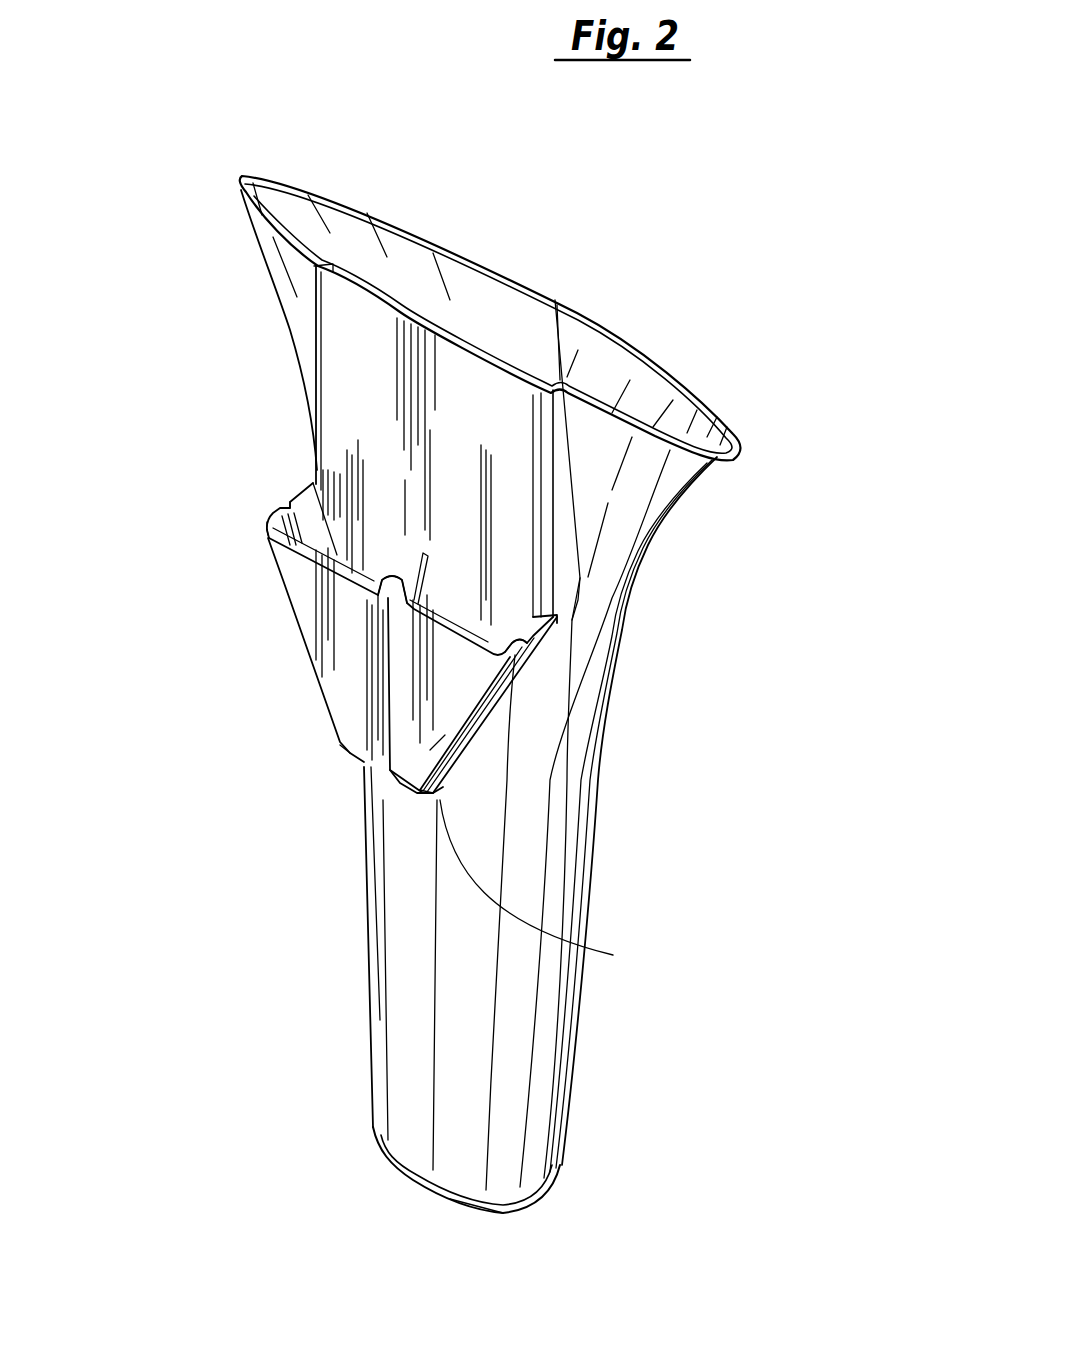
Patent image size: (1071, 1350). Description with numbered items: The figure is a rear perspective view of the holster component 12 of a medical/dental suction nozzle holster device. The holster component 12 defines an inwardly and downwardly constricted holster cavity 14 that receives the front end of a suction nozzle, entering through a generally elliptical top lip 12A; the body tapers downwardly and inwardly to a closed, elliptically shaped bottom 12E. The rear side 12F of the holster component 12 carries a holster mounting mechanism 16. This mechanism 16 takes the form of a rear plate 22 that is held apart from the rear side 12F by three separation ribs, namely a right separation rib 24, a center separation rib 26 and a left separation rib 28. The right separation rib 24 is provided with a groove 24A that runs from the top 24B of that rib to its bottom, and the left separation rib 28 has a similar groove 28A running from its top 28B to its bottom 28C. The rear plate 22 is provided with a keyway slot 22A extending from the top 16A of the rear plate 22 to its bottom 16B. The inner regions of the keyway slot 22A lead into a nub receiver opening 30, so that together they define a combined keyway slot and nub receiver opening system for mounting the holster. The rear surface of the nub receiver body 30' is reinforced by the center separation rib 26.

The holster component 12 is at (641, 584).
The top lip 12A is at (690, 390).
The closed bottom 12E is at (480, 1214).
The rear side 12F is at (368, 316).
The holster cavity 14 is at (520, 343).
The holster mounting mechanism 16 is at (313, 595).
The top of the rear plate 16A is at (435, 645).
The bottom of the rear plate 16B is at (400, 775).
The rear plate 22 is at (440, 723).
The keyway slot 22A is at (405, 633).
The right separation rib 24 is at (290, 500).
The groove 24A is at (272, 508).
The top of the right separation rib 24B is at (295, 490).
The center separation rib 26 is at (423, 560).
The left separation rib 28 is at (543, 637).
The groove 28A is at (540, 642).
The top of the left separation rib 28B is at (550, 633).
The bottom of the left separation rib 28C is at (613, 955).
The nub receiver opening 30 is at (291, 485).
The nub receiver body 30' is at (471, 553).